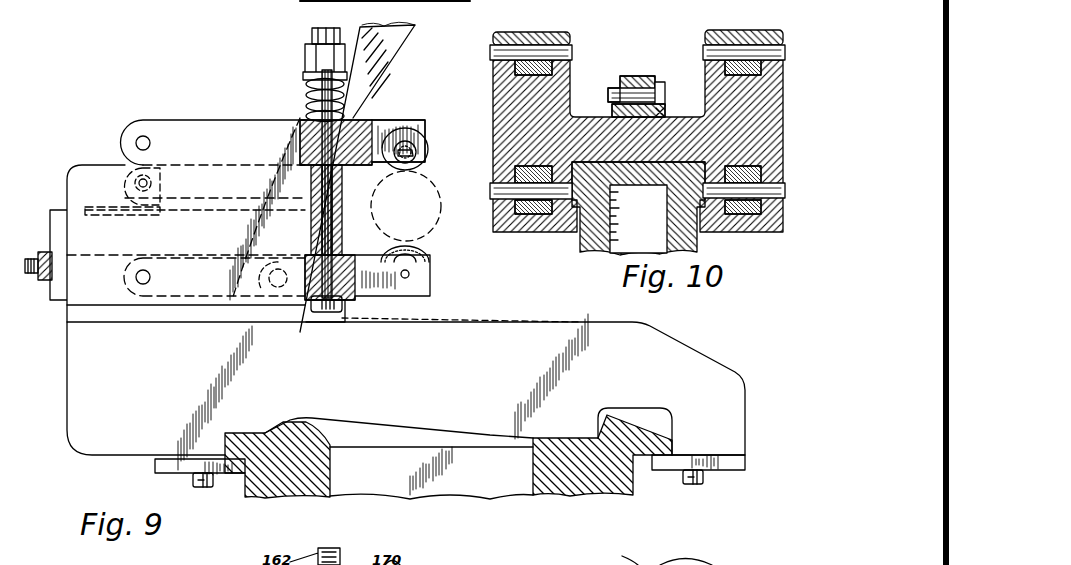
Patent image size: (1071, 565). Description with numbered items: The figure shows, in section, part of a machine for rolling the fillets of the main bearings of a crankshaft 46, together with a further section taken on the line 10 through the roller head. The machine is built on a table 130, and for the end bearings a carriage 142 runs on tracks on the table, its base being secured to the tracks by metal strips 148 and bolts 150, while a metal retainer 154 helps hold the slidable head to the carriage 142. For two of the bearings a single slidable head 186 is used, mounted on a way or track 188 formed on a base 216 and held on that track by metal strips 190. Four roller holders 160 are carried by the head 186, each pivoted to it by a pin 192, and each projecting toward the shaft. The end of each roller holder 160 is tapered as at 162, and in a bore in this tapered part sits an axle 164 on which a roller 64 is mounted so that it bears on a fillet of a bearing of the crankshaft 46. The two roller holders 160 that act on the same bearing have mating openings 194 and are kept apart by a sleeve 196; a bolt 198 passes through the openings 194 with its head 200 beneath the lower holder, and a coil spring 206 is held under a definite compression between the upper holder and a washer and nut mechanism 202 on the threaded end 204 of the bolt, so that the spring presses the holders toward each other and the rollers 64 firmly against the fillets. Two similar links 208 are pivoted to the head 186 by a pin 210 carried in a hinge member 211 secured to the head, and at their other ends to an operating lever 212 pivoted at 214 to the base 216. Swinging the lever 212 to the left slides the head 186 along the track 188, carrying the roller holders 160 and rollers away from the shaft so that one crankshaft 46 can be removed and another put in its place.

In FIG. 9, the section line 10 is at (163, 85).
In FIG. 9, the crankshaft 46 is at (420, 204).
In FIG. 9, the roller 64 is at (422, 148).
In FIG. 9, the table 130 is at (540, 462).
In FIG. 9, the carriage 142 is at (750, 564).
In FIG. 9, the metal strips 148 is at (162, 472).
In FIG. 9, the bolts 150 is at (196, 485).
In FIG. 9, the metal retainer 154 is at (630, 552).
In FIG. 9, the roller holder 160 is at (357, 120).
In FIG. 10, the roller holder 160 is at (540, 33).
In FIG. 9, the tapered end 162 is at (400, 125).
In FIG. 9, the axle 164 is at (408, 278).
In FIG. 9, the slidable head 186 is at (76, 237).
In FIG. 10, the slidable head 186 is at (552, 95).
In FIG. 10, the track 188 is at (580, 212).
In FIG. 10, the metal strips 190 is at (690, 224).
In FIG. 9, the pins 192 is at (136, 143).
In FIG. 10, the pins 192 is at (558, 52).
In FIG. 9, the mating openings 194 is at (318, 290).
In FIG. 9, the sleeve 196 is at (343, 192).
In FIG. 9, the bolt 198 is at (322, 240).
In FIG. 9, the bolt head 200 is at (326, 310).
In FIG. 9, the washer and nut mechanism 202 is at (312, 56).
In FIG. 9, the threaded end 204 is at (312, 34).
In FIG. 9, the coil spring 206 is at (312, 88).
In FIG. 9, the links 208 is at (220, 165).
In FIG. 10, the links 208 is at (640, 77).
In FIG. 9, the pin 210 is at (136, 185).
In FIG. 10, the pin 210 is at (618, 95).
In FIG. 9, the hinge member 211 is at (85, 207).
In FIG. 10, the hinge member 211 is at (660, 110).
In FIG. 9, the operating lever 212 is at (388, 40).
In FIG. 9, the pivot 214 is at (270, 283).
In FIG. 9, the base 216 is at (85, 398).